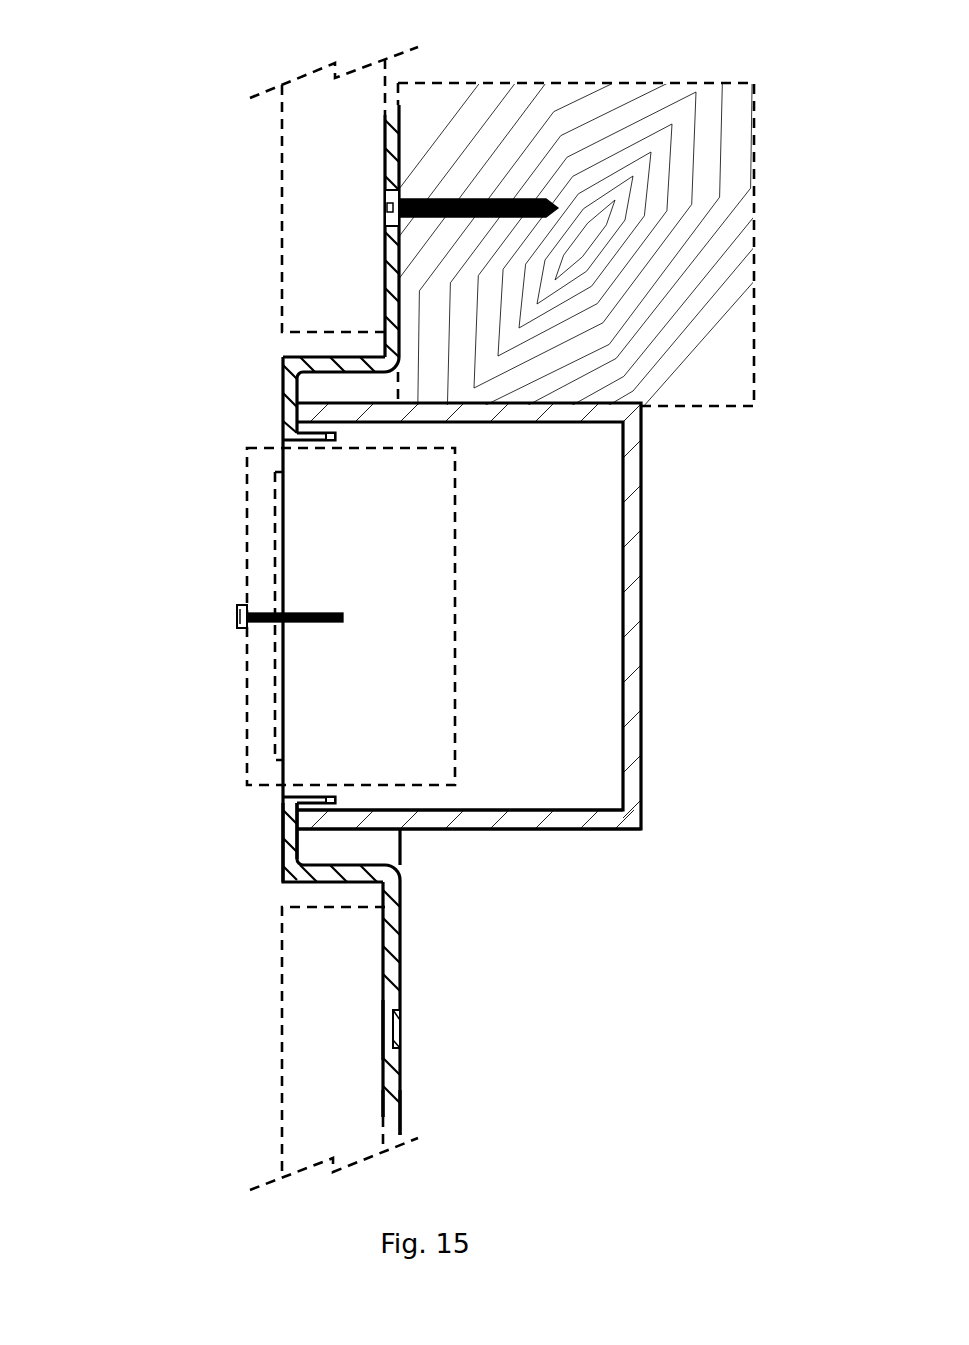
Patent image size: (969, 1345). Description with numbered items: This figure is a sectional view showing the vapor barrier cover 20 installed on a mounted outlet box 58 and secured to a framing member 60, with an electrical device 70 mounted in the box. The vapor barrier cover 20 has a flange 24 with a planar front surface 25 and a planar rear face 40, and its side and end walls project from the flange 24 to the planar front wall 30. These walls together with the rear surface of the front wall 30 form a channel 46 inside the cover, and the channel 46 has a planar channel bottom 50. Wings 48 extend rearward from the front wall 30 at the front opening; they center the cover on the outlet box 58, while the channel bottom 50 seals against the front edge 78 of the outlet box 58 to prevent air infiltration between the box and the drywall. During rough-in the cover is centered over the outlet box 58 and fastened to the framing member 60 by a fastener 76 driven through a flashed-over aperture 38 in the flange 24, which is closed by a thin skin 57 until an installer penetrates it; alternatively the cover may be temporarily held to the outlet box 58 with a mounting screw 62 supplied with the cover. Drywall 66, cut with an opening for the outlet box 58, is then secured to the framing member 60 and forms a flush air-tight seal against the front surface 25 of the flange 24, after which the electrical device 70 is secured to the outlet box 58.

The vapor barrier cover 20 is at (195, 588).
The flange 24 is at (395, 1095).
The planar front surface 25 is at (375, 283).
The front wall 30 is at (283, 400).
The flashed-over aperture 38 is at (385, 1025).
The planar rear face 40 is at (405, 943).
The channel 46 is at (383, 848).
The wing 48 is at (327, 441).
The channel bottom 50 is at (297, 842).
The thin skin 57 is at (398, 1028).
The outlet box 58 is at (629, 826).
The framing member 60 is at (652, 292).
The mounting screw 62 is at (313, 608).
The drywall 66 is at (347, 172).
The electrical device 70 is at (450, 594).
The fastener 76 is at (468, 197).
The front edge 78 is at (281, 821).